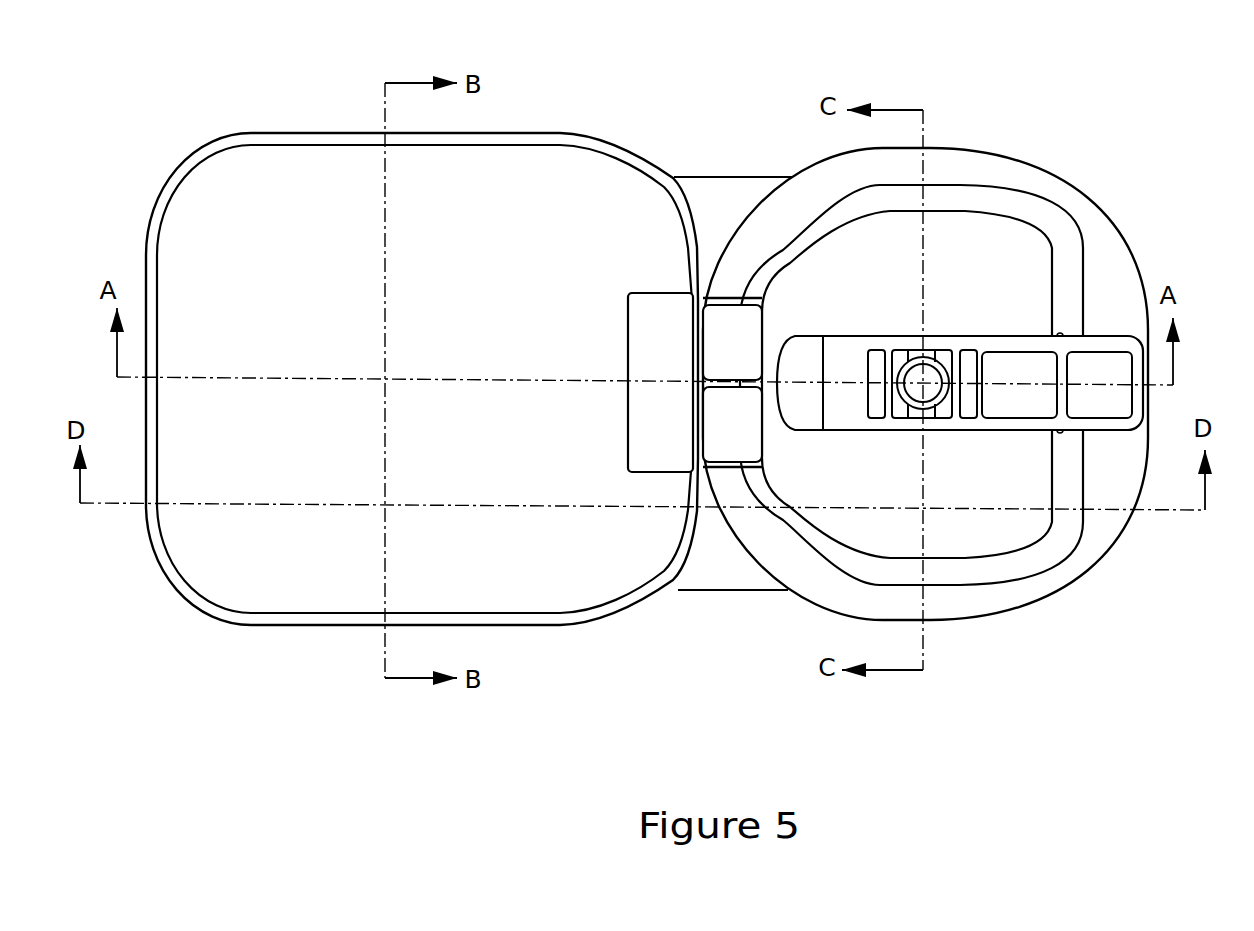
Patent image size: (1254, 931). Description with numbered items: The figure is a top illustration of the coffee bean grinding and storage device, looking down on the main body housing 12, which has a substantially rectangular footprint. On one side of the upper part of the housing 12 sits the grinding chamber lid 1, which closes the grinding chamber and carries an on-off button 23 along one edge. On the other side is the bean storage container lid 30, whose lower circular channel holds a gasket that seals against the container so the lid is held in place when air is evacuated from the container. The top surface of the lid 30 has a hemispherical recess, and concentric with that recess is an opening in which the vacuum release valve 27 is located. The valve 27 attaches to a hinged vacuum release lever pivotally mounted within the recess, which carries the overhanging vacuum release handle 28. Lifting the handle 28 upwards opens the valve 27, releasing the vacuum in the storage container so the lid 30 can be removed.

The grinding chamber lid 1 is at (272, 217).
The main body housing 12 is at (737, 202).
The on-off button 23 is at (662, 437).
The vacuum release valve 27 is at (928, 392).
The vacuum release handle 28 is at (1100, 398).
The bean storage container lid 30 is at (1023, 253).